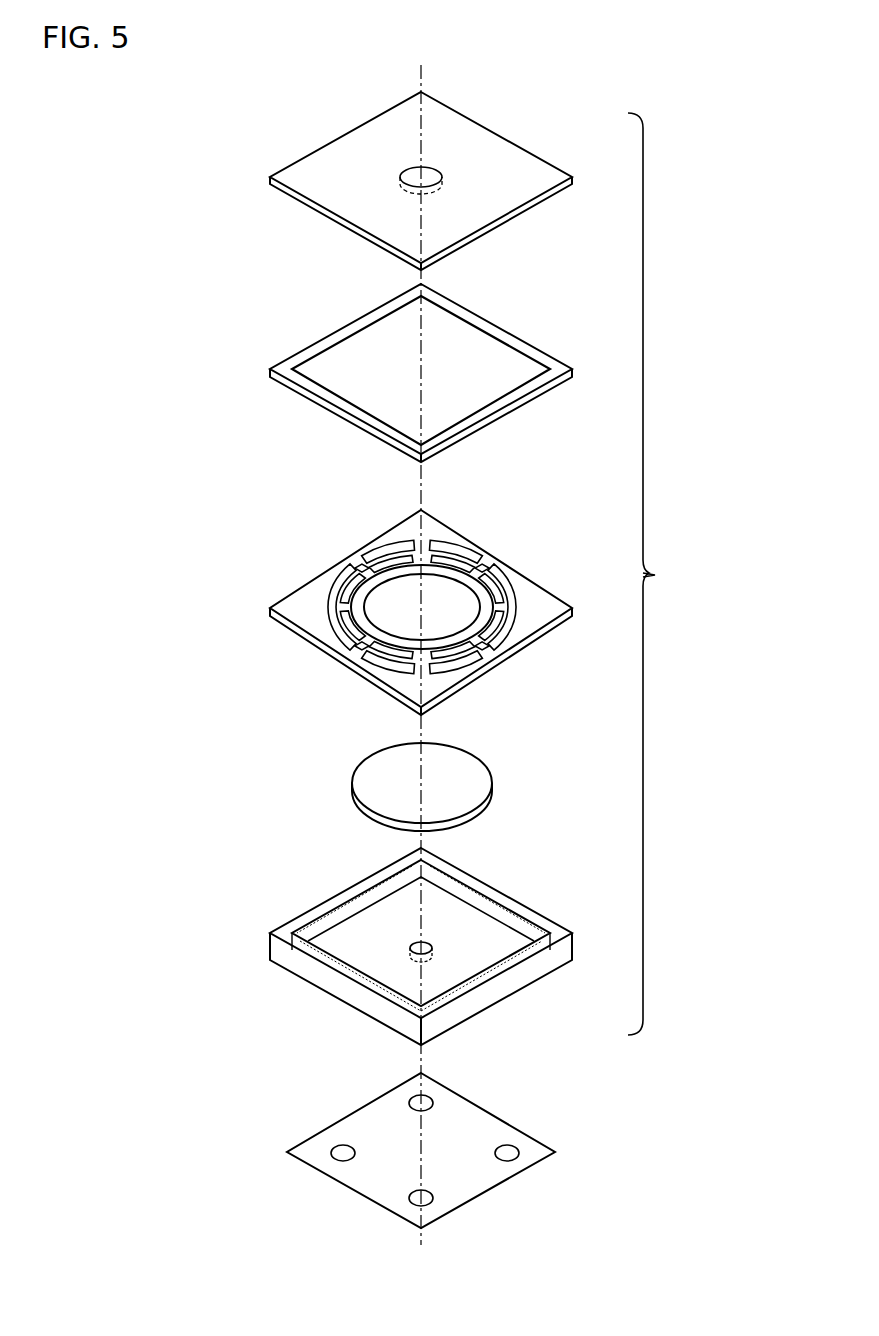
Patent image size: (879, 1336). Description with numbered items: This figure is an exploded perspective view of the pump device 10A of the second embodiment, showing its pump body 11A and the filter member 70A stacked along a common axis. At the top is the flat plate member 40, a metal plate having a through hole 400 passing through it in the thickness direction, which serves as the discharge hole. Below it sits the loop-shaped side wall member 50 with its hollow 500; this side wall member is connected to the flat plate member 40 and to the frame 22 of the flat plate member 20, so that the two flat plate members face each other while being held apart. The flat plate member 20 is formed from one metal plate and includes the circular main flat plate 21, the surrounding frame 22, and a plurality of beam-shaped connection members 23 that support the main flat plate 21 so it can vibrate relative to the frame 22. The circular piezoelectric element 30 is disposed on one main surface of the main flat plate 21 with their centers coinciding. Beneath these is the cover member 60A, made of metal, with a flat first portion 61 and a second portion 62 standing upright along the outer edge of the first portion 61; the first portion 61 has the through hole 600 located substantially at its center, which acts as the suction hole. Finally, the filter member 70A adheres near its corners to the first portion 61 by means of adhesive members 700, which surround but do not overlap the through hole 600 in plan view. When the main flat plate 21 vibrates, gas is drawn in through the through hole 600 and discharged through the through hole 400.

The pump device 10A is at (577, 86).
The pump body 11A is at (669, 574).
The flat plate member 20 is at (524, 546).
The main flat plate 21 is at (384, 596).
The frame 22 is at (533, 598).
The connection members 23 is at (503, 640).
The piezoelectric element 30 is at (481, 783).
The flat plate member 40 is at (546, 174).
The through hole 400 is at (428, 176).
The side wall member 50 is at (547, 364).
The hollow 500 is at (474, 349).
The cover member 60A is at (583, 936).
The first portion 61 is at (467, 972).
The second portion 62 is at (515, 975).
The through hole 600 is at (428, 942).
The filter member 70A is at (493, 1122).
The adhesive members 700 is at (433, 1097).